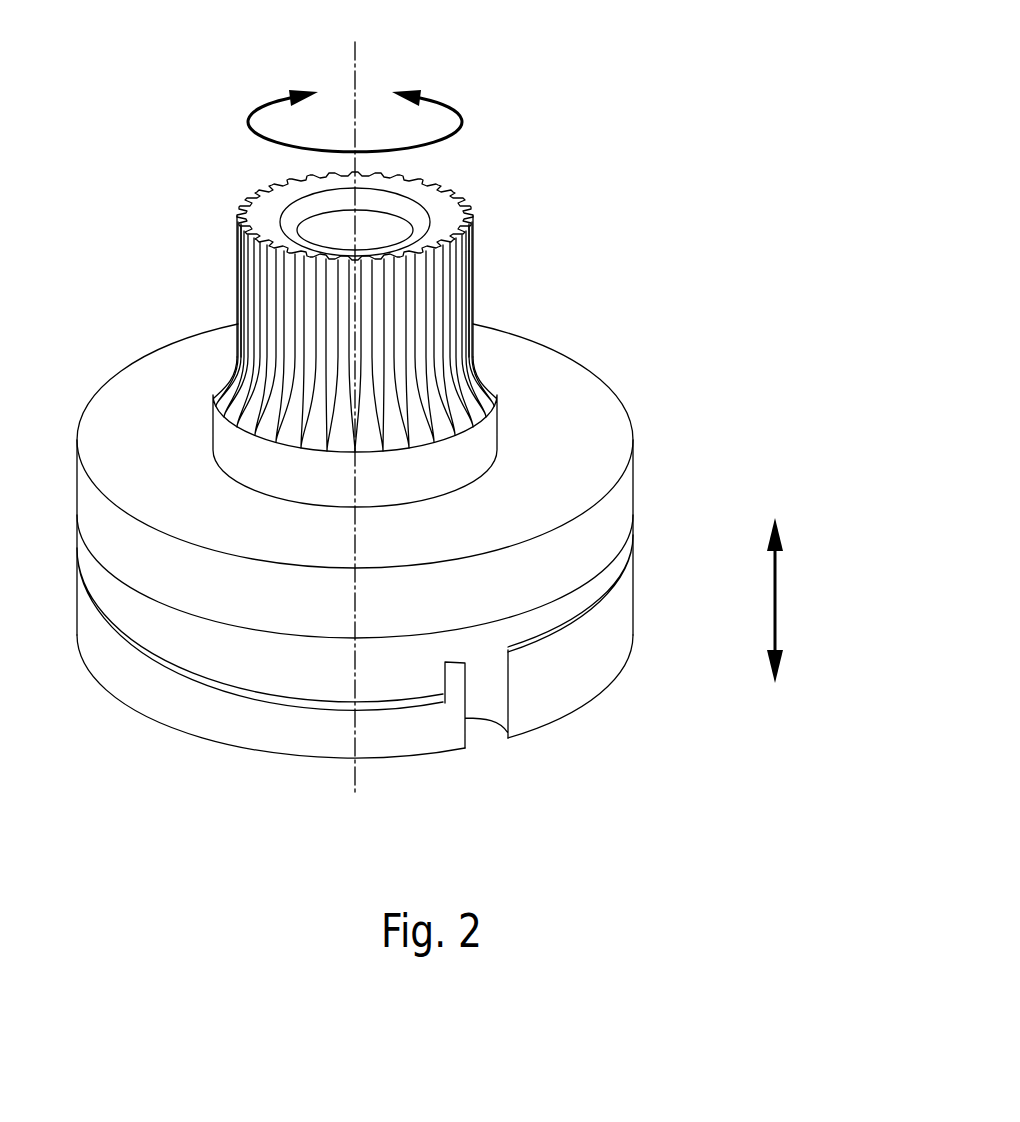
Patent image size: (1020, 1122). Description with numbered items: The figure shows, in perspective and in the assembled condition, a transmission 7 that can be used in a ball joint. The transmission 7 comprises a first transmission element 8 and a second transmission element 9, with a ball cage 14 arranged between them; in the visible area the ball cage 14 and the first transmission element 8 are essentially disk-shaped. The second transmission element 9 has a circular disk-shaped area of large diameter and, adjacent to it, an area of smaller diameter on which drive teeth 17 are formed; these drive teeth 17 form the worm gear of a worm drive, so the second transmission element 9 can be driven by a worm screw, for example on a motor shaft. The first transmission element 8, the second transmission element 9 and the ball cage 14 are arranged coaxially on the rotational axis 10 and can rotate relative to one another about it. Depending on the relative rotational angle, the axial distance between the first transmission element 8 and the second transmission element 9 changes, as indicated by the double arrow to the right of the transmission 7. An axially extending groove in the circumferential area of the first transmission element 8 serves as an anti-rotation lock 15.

The transmission 7 is at (821, 275).
The first transmission element 8 is at (610, 653).
The second transmission element 9 is at (565, 390).
The rotational axis 10 is at (354, 54).
The ball cage 14 is at (158, 628).
The anti-rotation lock 15 is at (485, 692).
The drive teeth 17 is at (486, 266).